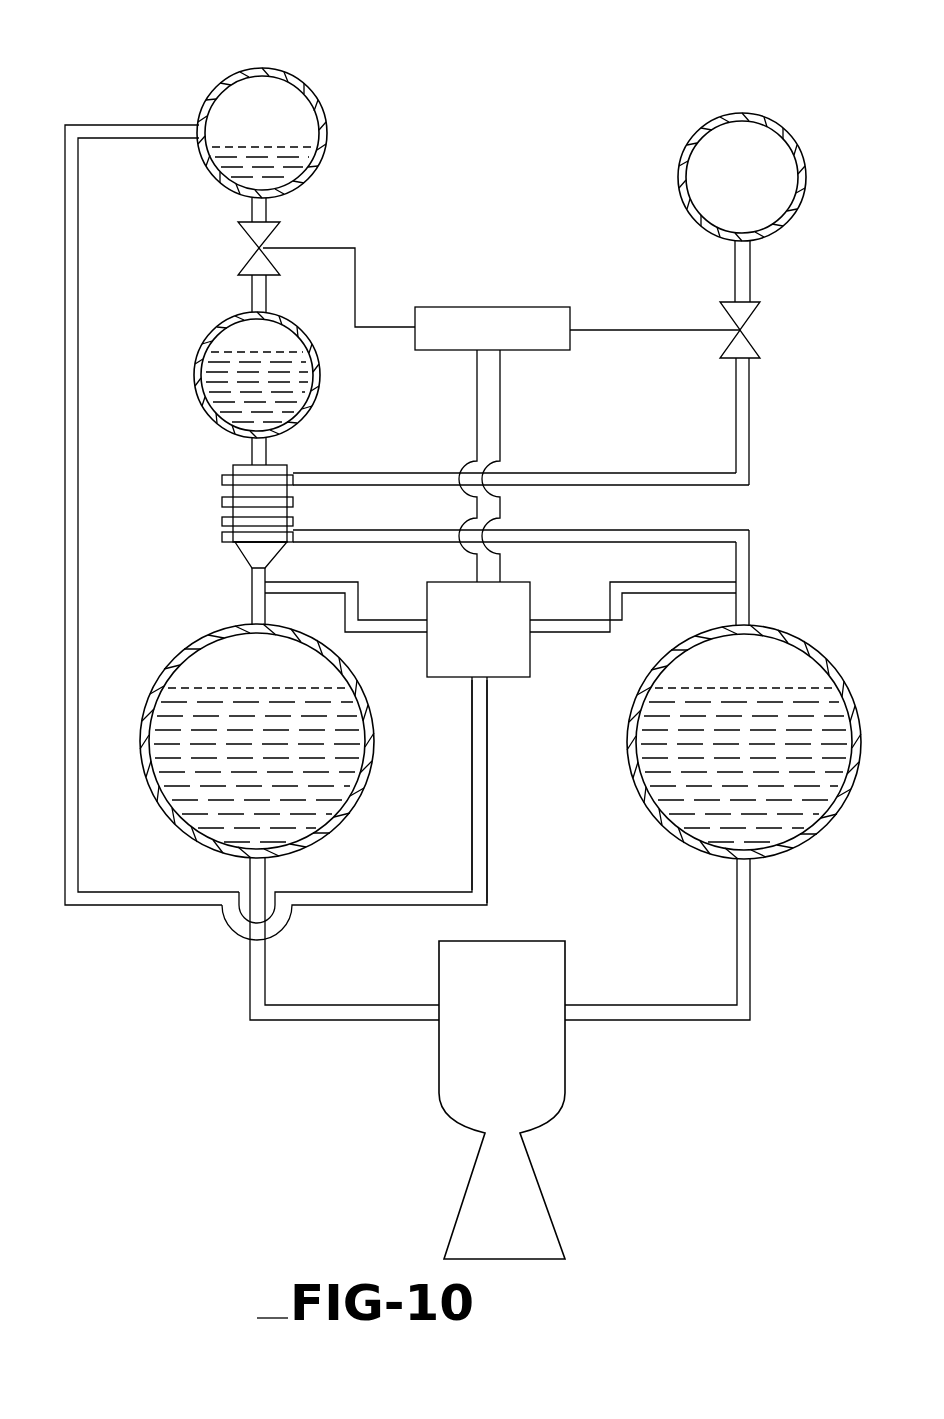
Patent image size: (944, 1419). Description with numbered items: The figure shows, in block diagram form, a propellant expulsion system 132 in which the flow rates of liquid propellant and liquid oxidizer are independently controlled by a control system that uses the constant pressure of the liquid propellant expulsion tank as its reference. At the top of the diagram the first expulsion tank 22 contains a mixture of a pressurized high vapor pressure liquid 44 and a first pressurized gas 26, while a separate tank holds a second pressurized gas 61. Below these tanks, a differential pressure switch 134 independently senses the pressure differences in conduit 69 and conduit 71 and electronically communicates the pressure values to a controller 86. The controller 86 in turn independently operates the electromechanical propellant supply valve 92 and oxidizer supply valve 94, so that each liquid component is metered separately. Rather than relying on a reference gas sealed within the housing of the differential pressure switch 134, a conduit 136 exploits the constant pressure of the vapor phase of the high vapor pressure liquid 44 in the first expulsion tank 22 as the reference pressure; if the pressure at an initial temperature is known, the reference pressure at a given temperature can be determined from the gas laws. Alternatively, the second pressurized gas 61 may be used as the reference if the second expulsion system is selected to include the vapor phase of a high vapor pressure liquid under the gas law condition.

The propellant expulsion system 132 is at (502, 72).
The first expulsion tank 22 is at (190, 86).
The first pressurized gas 26 is at (300, 108).
The pressurized high vapor pressure liquid 44 is at (306, 170).
The propellant supply valve 92 is at (240, 262).
The controller 86 is at (525, 320).
The second pressurized gas 61 is at (780, 155).
The oxidizer supply valve 94 is at (756, 332).
The conduit 69 is at (250, 586).
The conduit 71 is at (750, 586).
The differential pressure switch 134 is at (513, 668).
The conduit 136 is at (480, 852).